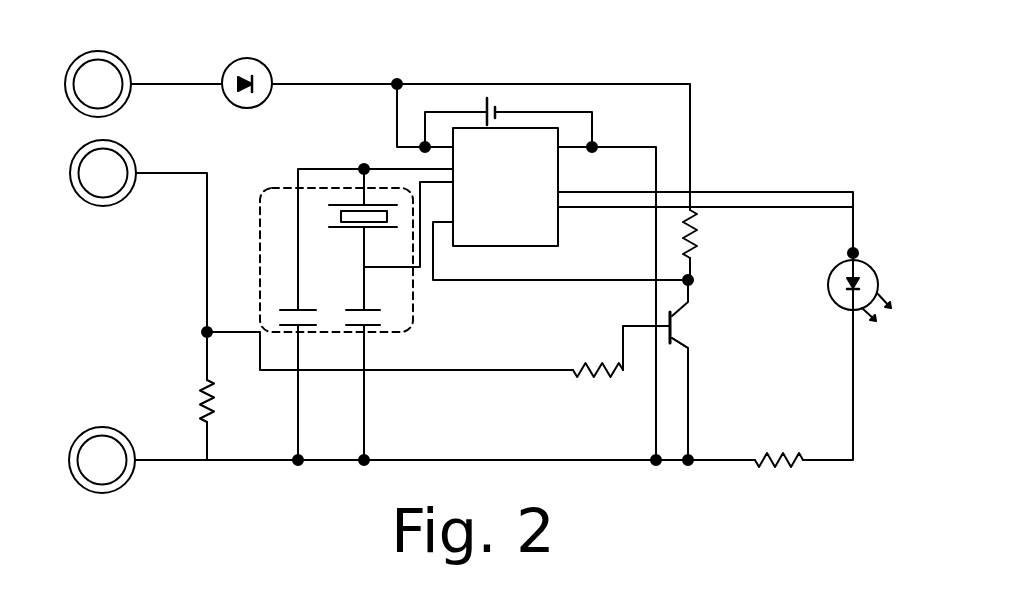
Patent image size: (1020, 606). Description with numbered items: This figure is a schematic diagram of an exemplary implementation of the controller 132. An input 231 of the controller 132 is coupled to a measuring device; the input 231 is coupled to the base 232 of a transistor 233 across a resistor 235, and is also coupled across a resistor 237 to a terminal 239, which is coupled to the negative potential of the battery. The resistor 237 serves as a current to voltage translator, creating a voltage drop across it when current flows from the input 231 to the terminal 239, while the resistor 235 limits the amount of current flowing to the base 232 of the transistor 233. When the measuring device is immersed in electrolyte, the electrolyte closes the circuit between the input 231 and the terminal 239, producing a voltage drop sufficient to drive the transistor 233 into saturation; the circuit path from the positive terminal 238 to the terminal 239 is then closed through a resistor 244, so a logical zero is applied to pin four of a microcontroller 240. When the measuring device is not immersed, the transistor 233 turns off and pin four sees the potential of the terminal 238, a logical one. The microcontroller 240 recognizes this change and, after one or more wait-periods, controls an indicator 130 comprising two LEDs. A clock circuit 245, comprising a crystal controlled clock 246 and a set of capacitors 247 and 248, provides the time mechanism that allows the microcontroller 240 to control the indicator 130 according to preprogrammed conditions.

The controller 132 is at (532, 65).
The terminal 238 is at (97, 51).
The input 231 is at (113, 143).
The terminal 239 is at (110, 428).
The microcontroller 240 is at (507, 247).
The clock circuit 245 is at (270, 192).
The crystal controlled clock 246 is at (337, 173).
The capacitor 247 is at (380, 325).
The capacitor 248 is at (295, 308).
The resistor 237 is at (210, 385).
The resistor 235 is at (603, 380).
The resistor 244 is at (700, 240).
The base 232 is at (668, 323).
The transistor 233 is at (688, 324).
The indicator 130 is at (828, 280).